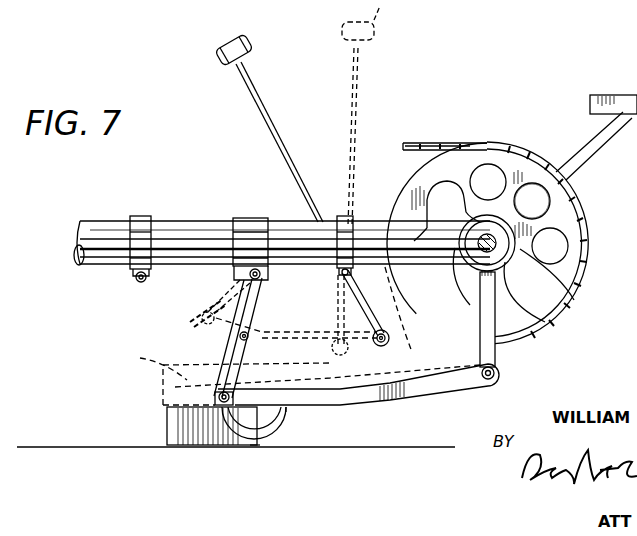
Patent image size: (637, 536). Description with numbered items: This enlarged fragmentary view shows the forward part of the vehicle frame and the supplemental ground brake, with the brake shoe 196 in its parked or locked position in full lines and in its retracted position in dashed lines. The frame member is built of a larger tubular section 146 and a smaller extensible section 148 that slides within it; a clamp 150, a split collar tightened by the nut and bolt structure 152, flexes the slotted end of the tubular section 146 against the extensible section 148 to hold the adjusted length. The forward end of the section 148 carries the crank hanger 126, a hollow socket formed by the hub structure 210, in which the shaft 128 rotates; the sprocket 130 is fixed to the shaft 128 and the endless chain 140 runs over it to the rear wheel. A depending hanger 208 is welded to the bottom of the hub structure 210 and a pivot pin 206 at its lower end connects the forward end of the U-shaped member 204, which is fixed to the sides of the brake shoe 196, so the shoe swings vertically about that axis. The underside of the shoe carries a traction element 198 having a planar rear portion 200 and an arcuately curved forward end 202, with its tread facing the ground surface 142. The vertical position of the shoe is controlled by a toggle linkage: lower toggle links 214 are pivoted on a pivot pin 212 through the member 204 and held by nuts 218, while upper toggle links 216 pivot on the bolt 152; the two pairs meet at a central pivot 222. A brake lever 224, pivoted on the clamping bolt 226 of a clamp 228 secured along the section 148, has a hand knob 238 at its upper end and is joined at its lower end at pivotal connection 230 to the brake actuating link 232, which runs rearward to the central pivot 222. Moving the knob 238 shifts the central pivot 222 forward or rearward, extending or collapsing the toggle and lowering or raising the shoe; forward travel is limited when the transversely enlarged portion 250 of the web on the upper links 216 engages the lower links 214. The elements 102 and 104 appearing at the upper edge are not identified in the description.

The frame member 102 is at (577, 0).
The frame member 104 is at (546, 0).
The crank hanger 126 is at (558, 300).
The shaft 128 is at (480, 270).
The sprocket 130 is at (460, 165).
The endless chain 140 is at (415, 148).
The ground surface 142 is at (64, 443).
The tubular section 146 is at (205, 237).
The extensible section 148 is at (424, 222).
The clamp 150 is at (250, 235).
The nut and bolt structure 152 is at (267, 283).
The brake shoe 196 is at (228, 468).
The traction element 198 is at (178, 448).
The planar rear portion 200 is at (262, 450).
The arcuately curved forward end 202 is at (284, 424).
The U-shaped member 204 is at (370, 402).
The pivot pin 206 is at (497, 373).
The depending hanger 208 is at (481, 303).
The hub structure 210 is at (525, 188).
The pivot pin 212 is at (215, 396).
The lower toggle links 214 is at (250, 346).
The upper toggle links 216 is at (252, 298).
The nuts 218 is at (254, 448).
The central pivot 222 is at (195, 310).
The brake lever 224 is at (278, 135).
The clamping bolt 226 is at (362, 265).
The clamp 228 is at (345, 228).
The pivotal connection 230 is at (395, 312).
The brake actuating link 232 is at (365, 345).
The hand knob 238 is at (235, 41).
The transversely enlarged portion 250 is at (232, 328).